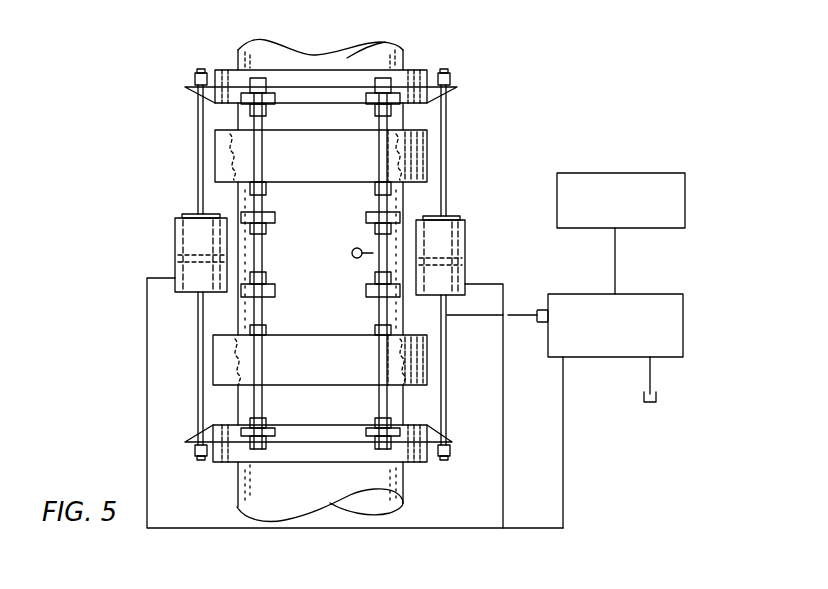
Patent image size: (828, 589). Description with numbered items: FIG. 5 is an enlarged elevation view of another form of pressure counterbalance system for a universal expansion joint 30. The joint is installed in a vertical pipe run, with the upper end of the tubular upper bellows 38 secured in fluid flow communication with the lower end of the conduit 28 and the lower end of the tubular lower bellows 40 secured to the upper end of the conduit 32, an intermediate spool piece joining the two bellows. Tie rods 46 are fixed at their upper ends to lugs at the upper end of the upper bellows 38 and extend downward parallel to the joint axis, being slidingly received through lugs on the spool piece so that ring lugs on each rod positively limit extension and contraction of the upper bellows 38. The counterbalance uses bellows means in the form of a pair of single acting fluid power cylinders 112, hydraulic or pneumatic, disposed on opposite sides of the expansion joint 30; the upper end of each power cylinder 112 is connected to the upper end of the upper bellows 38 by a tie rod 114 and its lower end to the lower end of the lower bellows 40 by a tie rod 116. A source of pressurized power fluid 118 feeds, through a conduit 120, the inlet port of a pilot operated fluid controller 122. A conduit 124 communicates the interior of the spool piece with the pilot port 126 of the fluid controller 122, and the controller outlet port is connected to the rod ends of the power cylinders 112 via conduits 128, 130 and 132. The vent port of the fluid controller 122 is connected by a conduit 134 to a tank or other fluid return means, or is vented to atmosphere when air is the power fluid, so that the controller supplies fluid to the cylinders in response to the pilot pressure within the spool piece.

The conduit 28 is at (402, 63).
The universal expansion joint 30 is at (405, 219).
The conduit 32 is at (400, 481).
The upper bellows 38 is at (432, 140).
The lower bellows 40 is at (213, 366).
The tie rods 46 is at (256, 122).
The single acting fluid power cylinders 112 is at (176, 231).
The tie rod 114 is at (197, 152).
The tie rod 116 is at (198, 328).
The source of pressurized power fluid 118 is at (603, 173).
The conduit 120 is at (617, 262).
The pilot operated fluid controller 122 is at (578, 294).
The conduit 124 is at (521, 313).
The pilot port 126 is at (546, 326).
The conduit 128 is at (563, 468).
The conduit 130 is at (503, 451).
The conduit 132 is at (193, 528).
The conduit 134 is at (648, 374).